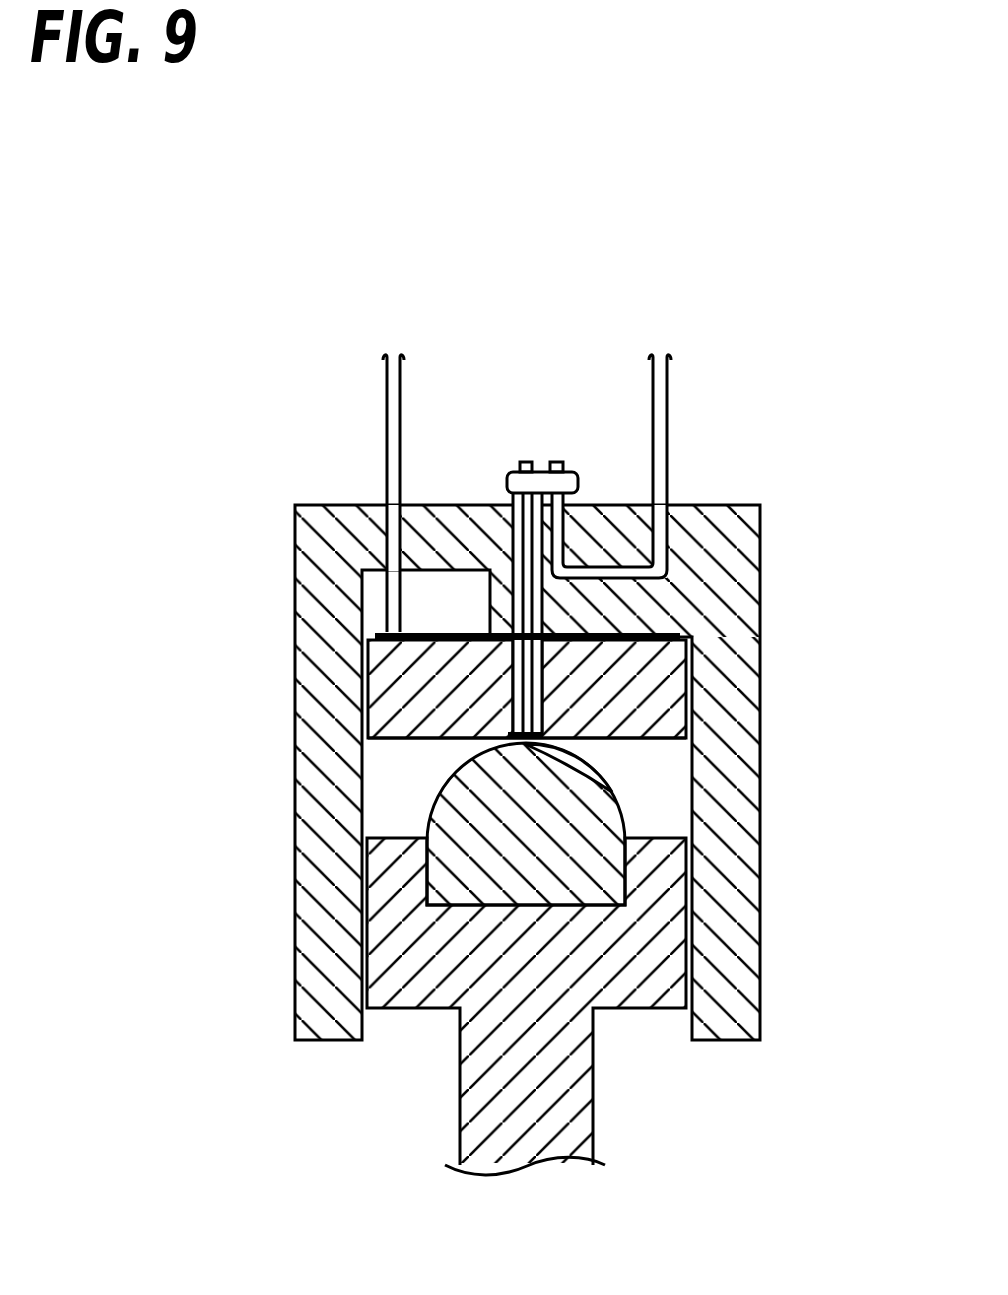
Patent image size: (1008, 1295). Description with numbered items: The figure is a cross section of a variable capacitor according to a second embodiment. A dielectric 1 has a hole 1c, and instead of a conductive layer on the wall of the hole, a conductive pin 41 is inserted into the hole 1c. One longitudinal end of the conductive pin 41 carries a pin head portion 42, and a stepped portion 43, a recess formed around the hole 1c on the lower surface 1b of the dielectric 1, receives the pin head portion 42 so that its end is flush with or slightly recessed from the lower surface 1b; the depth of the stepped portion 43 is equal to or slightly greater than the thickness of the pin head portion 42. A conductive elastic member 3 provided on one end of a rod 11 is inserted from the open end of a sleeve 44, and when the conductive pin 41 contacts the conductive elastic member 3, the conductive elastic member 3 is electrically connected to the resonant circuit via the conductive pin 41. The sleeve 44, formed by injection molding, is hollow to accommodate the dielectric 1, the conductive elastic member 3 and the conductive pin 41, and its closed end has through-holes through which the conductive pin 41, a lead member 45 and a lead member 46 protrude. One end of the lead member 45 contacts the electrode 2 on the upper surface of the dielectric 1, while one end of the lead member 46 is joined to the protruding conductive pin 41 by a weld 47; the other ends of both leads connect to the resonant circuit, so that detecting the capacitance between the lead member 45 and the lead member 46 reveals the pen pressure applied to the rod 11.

The dielectric 1 is at (673, 660).
The lower surface 1b is at (638, 740).
The hole 1c is at (540, 680).
The electrode 2 is at (657, 633).
The conductive elastic member 3 is at (608, 810).
The rod 11 is at (593, 1113).
The conductive pin 41 is at (527, 610).
The pin head portion 42 is at (605, 780).
The stepped portion 43 is at (507, 723).
The sleeve 44 is at (298, 599).
The lead member 45 is at (387, 407).
The lead member 46 is at (667, 402).
The weld 47 is at (543, 483).